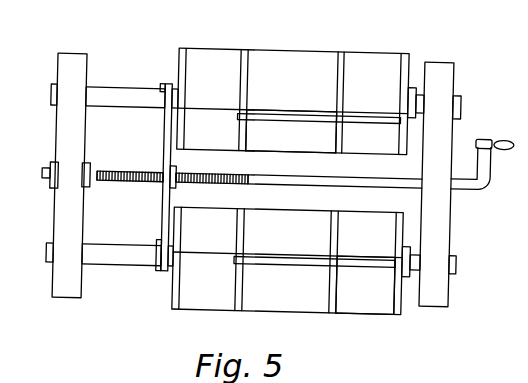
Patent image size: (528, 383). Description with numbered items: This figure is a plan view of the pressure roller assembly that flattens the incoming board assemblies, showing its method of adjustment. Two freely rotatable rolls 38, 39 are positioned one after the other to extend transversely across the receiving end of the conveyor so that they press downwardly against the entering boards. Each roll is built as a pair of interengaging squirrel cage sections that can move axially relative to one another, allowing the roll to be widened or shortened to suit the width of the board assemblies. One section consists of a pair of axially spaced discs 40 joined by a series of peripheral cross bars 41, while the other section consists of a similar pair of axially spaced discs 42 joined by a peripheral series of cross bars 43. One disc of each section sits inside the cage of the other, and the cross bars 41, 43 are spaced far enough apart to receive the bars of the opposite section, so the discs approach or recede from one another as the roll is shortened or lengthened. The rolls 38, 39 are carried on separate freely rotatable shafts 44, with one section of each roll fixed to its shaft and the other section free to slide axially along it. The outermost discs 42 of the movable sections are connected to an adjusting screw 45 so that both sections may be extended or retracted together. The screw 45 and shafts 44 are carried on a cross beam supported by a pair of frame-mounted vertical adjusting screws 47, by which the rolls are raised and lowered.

The roll 38 is at (288, 247).
The roll 39 is at (293, 89).
The axially spaced discs 40 is at (238, 135).
The peripheral cross bars 41 is at (320, 212).
The axially spaced discs 42 is at (183, 73).
The peripheral cross bars 43 is at (293, 174).
The shafts 44 is at (112, 175).
The adjusting screw 45 is at (232, 171).
The vertical adjusting screws 47 is at (488, 194).